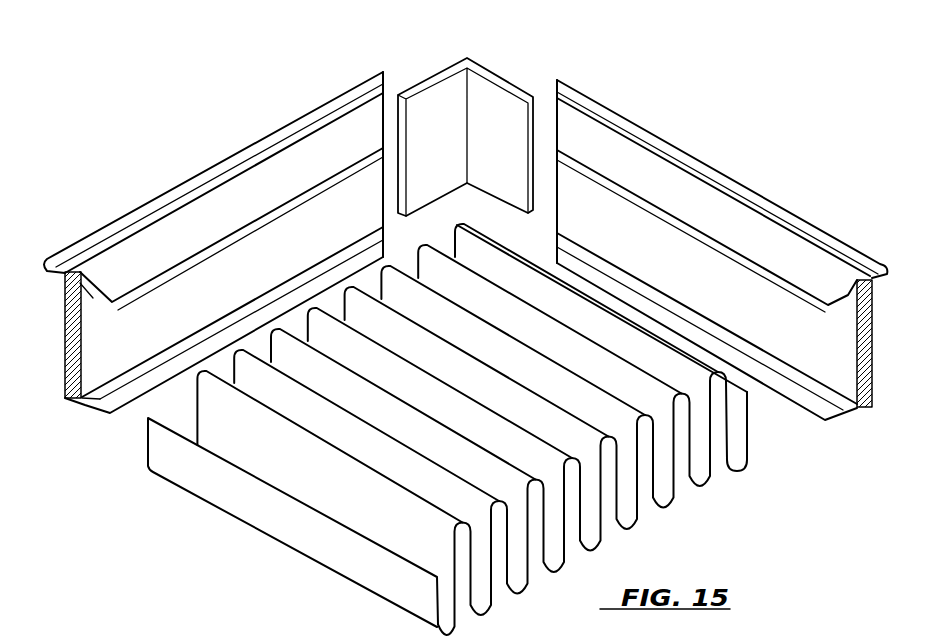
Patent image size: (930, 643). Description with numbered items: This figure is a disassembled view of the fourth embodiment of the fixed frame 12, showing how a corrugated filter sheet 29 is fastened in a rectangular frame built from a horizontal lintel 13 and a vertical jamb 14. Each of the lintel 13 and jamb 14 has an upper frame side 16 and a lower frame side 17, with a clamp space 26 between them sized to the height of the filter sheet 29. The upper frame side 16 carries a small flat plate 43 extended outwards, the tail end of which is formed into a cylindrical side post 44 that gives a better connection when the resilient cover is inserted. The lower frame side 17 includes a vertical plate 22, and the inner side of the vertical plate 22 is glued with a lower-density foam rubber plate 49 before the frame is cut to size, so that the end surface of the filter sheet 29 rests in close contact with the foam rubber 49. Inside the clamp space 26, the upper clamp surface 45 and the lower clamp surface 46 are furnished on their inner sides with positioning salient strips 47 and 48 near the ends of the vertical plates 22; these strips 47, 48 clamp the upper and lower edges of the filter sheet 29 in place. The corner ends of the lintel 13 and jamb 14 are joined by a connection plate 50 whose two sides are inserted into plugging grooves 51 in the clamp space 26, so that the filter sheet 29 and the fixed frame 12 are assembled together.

The fixed frame 12 is at (614, 68).
The horizontal lintel 13 is at (204, 280).
The vertical jamb 14 is at (741, 125).
The upper frame side 16 is at (281, 160).
The lower frame side 17 is at (103, 428).
The vertical plate 22 is at (63, 355).
The clamp space 26 is at (447, 429).
The filter sheet 29 is at (307, 543).
The small flat plate 43 is at (228, 172).
The cylindrical side post 44 is at (170, 192).
The upper clamp surface 45 is at (205, 257).
The lower clamp surface 46 is at (250, 322).
The positioning salient strip 47 is at (88, 300).
The positioning salient strip 48 is at (146, 368).
The foam rubber plate 49 is at (327, 252).
The connection plate 50 is at (460, 123).
The plugging groove 51 is at (372, 192).